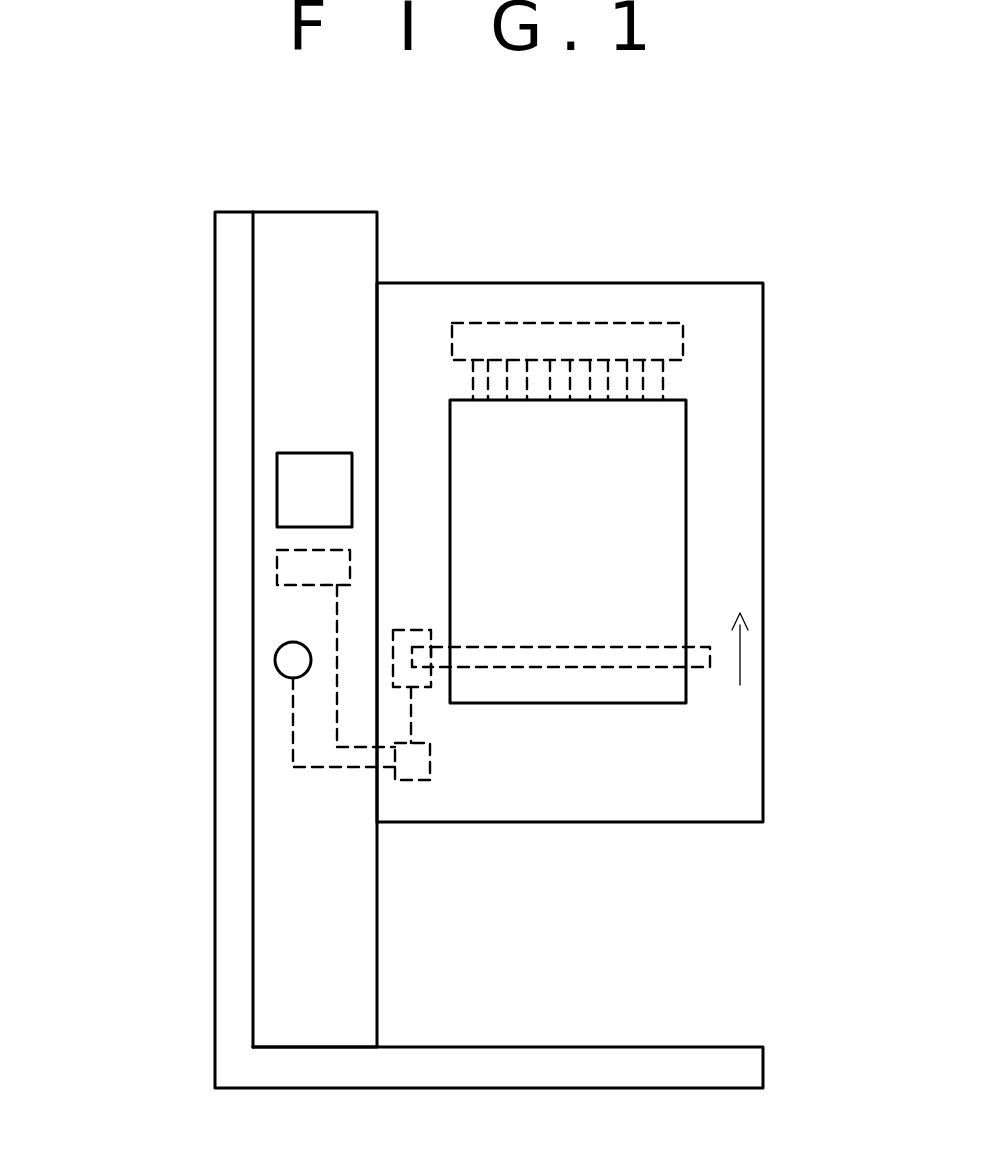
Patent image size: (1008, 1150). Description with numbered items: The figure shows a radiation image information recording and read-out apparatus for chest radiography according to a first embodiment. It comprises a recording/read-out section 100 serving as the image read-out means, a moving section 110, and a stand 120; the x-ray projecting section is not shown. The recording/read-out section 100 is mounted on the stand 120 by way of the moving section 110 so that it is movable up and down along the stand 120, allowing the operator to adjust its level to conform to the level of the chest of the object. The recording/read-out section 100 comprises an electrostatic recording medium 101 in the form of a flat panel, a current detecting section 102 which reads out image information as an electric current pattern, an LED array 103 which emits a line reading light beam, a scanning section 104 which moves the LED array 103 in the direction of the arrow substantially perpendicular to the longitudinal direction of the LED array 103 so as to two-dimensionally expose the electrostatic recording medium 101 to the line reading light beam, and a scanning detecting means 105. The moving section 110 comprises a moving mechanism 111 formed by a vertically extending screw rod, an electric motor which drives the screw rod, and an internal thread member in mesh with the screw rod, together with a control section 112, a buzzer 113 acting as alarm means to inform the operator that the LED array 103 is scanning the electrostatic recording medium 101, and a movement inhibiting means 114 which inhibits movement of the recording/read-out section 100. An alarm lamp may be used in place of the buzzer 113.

The recording/read-out section 100 is at (613, 512).
The electrostatic recording medium 101 is at (687, 465).
The current detecting section 102 is at (643, 323).
The LED array 103 is at (578, 645).
The scanning section 104 is at (415, 630).
The scanning detecting means 105 is at (430, 768).
The moving section 110 is at (305, 211).
The moving mechanism 111 is at (253, 388).
The control section 112 is at (277, 495).
The buzzer 113 is at (275, 660).
The movement inhibiting means 114 is at (277, 565).
The stand 120 is at (215, 272).